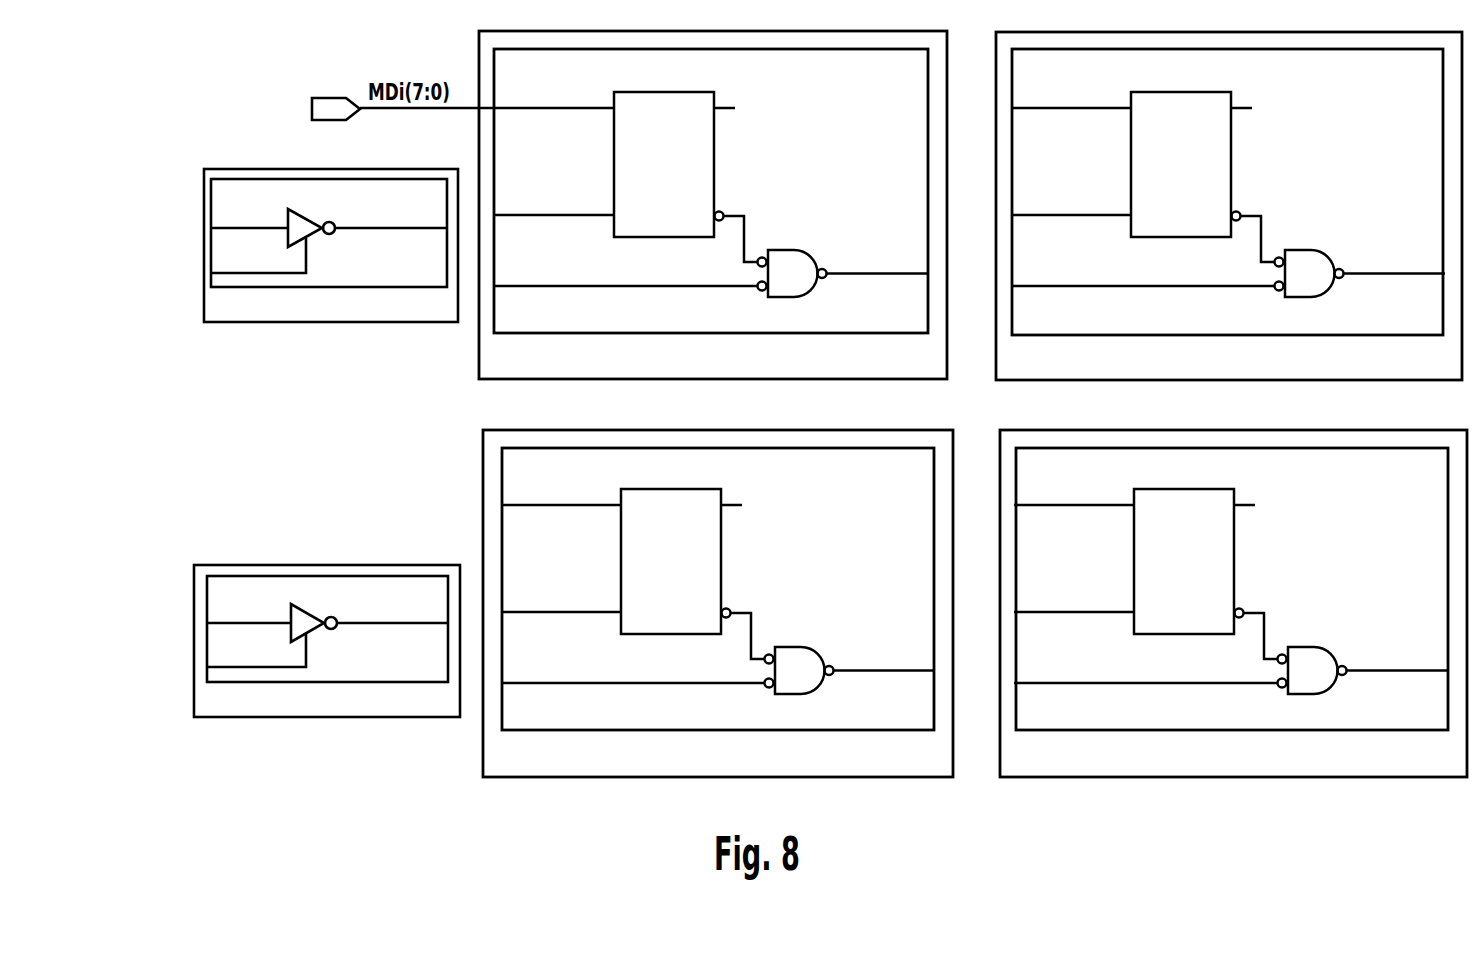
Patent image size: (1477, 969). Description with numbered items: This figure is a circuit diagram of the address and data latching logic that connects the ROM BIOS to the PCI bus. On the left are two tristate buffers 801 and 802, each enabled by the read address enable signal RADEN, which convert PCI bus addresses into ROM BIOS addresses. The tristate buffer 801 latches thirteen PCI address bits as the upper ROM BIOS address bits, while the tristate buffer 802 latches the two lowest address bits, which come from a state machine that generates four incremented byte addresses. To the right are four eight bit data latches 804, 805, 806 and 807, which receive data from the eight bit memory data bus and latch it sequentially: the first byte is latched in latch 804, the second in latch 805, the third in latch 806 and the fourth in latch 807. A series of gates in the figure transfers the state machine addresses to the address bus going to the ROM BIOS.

The tristate buffer 801 is at (204, 201).
The tristate buffer 802 is at (194, 598).
The latch 804 is at (713, 205).
The latch 805 is at (718, 603).
The latch 806 is at (1229, 206).
The latch 807 is at (1233, 603).